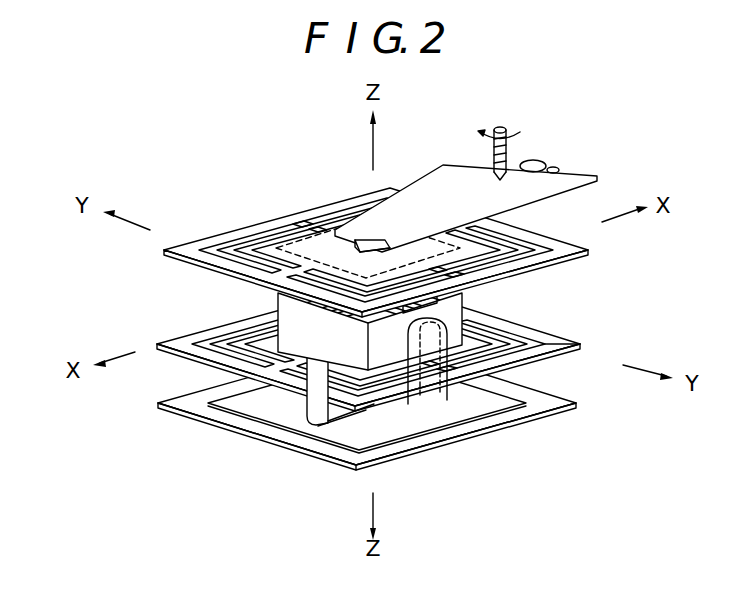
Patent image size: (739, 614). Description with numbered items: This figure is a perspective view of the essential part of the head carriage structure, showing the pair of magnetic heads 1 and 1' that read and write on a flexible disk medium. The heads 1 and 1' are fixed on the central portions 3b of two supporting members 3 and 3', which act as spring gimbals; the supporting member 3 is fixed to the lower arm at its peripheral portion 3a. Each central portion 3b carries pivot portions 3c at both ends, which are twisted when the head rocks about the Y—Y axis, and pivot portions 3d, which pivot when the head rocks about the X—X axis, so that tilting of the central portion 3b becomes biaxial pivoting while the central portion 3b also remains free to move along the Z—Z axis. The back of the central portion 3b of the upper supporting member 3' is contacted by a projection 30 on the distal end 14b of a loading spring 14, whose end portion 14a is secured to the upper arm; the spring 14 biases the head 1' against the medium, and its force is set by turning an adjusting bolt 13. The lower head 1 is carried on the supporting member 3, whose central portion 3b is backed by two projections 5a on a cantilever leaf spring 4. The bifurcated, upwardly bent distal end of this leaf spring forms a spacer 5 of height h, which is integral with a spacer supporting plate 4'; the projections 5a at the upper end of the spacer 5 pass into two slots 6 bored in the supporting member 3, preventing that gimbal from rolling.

The head 1 is at (307, 331).
The head 1' is at (293, 299).
The supporting member 3 is at (382, 348).
The supporting member 3' is at (376, 248).
The peripheral portion 3a is at (556, 338).
The central portion 3b is at (256, 246).
The pivot portions 3c is at (300, 227).
The pivot portions 3d is at (168, 255).
The cantilever leaf spring 4 is at (367, 416).
The spacer supporting plate 4' is at (339, 446).
The spacer 5 is at (313, 410).
The projections 5a is at (285, 383).
The slots 6 is at (317, 400).
The adjusting bolt 13 is at (500, 127).
The loading spring 14 is at (436, 190).
The end portion 14a is at (576, 172).
The distal end 14b is at (366, 252).
The projection 30 is at (352, 246).
The height h is at (388, 428).